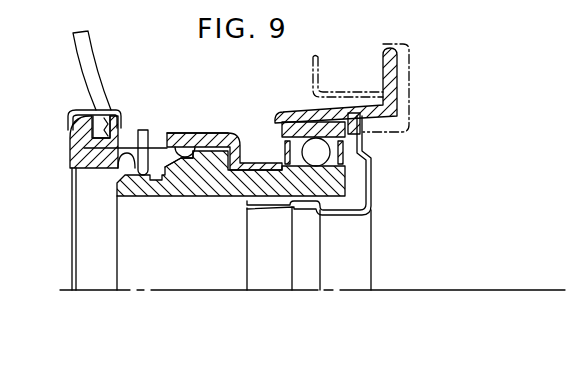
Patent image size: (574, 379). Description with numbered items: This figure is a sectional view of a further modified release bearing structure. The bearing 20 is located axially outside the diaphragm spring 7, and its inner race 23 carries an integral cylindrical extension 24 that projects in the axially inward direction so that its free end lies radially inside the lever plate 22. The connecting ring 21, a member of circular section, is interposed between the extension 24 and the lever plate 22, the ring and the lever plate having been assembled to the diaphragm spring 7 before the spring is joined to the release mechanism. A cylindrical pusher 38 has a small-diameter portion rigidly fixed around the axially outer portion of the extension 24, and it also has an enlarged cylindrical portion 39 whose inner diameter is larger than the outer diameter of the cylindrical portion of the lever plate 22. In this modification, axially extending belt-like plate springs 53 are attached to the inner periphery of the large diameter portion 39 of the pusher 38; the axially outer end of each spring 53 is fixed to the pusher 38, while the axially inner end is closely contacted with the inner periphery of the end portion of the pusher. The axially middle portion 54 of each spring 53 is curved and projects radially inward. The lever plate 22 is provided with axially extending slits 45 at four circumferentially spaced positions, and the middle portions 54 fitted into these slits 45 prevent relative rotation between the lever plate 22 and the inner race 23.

The diaphragm spring 7 is at (98, 53).
The bearing 20 is at (299, 111).
The connecting ring 21 is at (143, 128).
The lever plate 22 is at (71, 160).
The inner race 23 is at (349, 177).
The cylindrical extension 24 is at (190, 196).
The cylindrical pusher 38 is at (229, 131).
The enlarged cylindrical portion 39 is at (200, 133).
The slits 45 is at (165, 147).
The belt-like plate springs 53 is at (216, 152).
The axially middle portion 54 is at (199, 165).